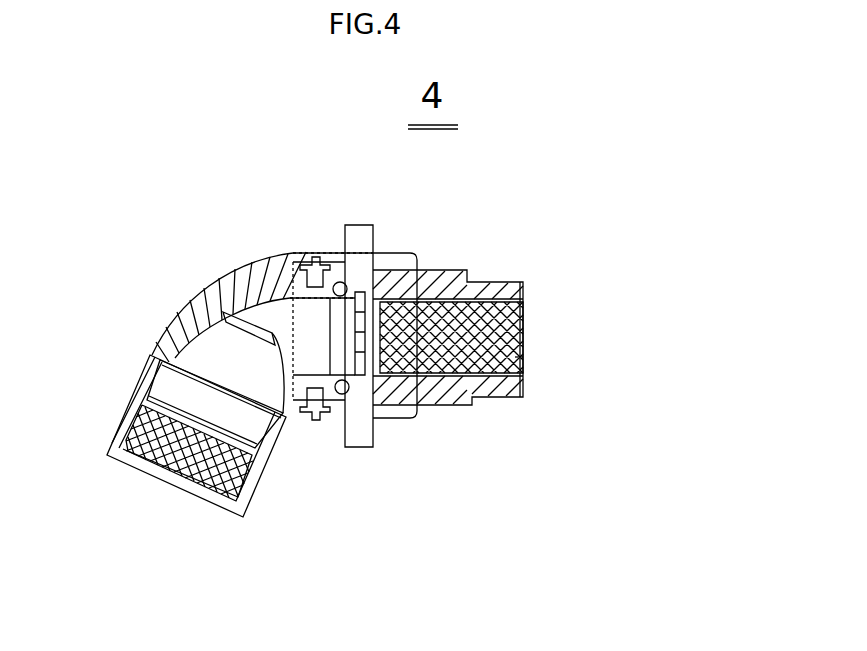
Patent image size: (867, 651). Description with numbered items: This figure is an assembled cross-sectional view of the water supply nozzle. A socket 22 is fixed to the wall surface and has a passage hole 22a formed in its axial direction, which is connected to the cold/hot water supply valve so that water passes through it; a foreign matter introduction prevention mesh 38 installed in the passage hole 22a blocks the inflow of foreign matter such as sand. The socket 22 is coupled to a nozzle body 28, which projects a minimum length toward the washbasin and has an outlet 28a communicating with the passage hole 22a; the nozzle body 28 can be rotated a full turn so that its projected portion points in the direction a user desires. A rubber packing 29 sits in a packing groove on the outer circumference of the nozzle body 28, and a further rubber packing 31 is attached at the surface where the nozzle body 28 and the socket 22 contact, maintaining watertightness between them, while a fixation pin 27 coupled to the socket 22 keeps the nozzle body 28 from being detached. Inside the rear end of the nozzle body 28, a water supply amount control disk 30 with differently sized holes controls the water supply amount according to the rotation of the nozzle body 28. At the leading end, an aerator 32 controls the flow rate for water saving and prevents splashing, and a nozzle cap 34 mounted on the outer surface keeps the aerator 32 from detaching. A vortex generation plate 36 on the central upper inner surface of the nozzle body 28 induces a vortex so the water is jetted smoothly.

The socket 22 is at (440, 408).
The passage hole 22a is at (528, 330).
The fixation pin 27 is at (325, 253).
The nozzle body 28 is at (227, 288).
The outlet 28a is at (223, 332).
The rubber packing 29 is at (352, 420).
The water supply amount control disk 30 is at (363, 320).
The rubber packing 31 is at (290, 252).
The aerator 32 is at (185, 468).
The nozzle cap 34 is at (250, 492).
The vortex generation plate 36 is at (280, 415).
The foreign matter introduction prevention mesh 38 is at (515, 357).